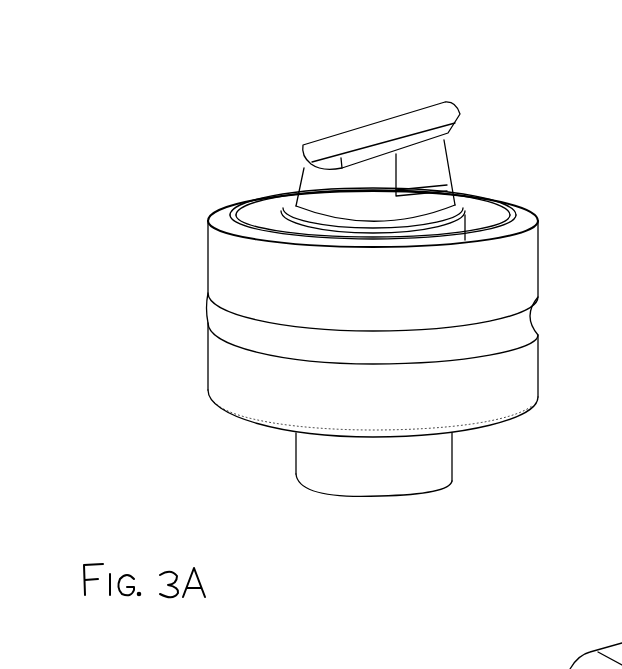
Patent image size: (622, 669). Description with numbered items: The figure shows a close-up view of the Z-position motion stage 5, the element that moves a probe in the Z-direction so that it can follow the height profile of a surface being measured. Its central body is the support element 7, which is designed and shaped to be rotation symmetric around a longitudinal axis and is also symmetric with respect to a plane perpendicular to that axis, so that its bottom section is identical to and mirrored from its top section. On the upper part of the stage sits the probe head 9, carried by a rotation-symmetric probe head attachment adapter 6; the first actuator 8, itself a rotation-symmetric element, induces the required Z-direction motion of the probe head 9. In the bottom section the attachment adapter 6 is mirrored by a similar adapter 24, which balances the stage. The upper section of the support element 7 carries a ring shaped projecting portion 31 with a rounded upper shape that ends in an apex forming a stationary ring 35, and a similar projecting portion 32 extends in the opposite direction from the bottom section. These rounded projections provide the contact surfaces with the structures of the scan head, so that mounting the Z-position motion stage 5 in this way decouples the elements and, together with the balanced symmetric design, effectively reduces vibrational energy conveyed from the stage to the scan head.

The Z-position motion stage 5 is at (556, 372).
The probe head attachment adapter 6 is at (306, 184).
The support element 7 is at (538, 267).
The first actuator 8 is at (288, 229).
The probe head 9 is at (349, 137).
The adapter 24 is at (308, 476).
The ring shaped projecting portion 31 is at (211, 225).
The projecting portion 32 is at (214, 403).
The stationary ring 35 is at (611, 648).